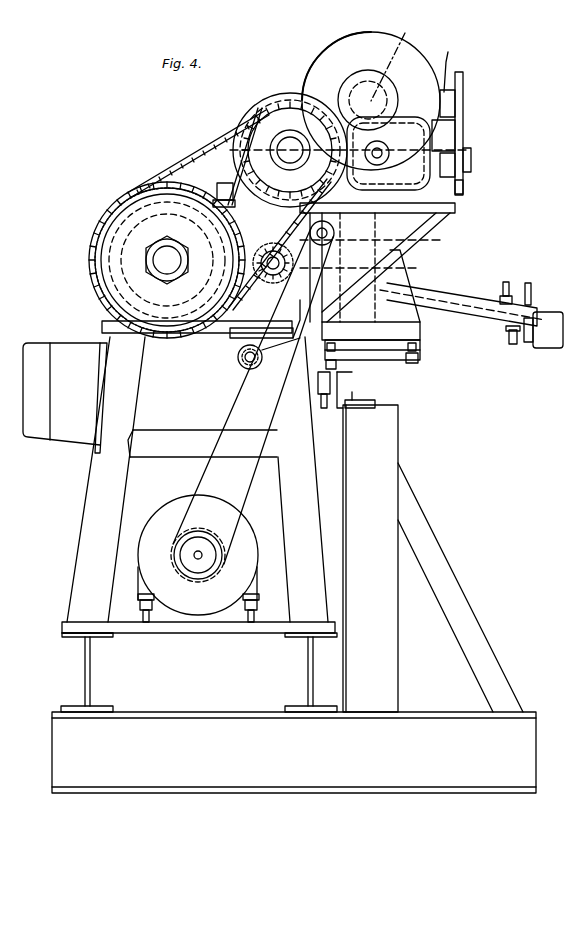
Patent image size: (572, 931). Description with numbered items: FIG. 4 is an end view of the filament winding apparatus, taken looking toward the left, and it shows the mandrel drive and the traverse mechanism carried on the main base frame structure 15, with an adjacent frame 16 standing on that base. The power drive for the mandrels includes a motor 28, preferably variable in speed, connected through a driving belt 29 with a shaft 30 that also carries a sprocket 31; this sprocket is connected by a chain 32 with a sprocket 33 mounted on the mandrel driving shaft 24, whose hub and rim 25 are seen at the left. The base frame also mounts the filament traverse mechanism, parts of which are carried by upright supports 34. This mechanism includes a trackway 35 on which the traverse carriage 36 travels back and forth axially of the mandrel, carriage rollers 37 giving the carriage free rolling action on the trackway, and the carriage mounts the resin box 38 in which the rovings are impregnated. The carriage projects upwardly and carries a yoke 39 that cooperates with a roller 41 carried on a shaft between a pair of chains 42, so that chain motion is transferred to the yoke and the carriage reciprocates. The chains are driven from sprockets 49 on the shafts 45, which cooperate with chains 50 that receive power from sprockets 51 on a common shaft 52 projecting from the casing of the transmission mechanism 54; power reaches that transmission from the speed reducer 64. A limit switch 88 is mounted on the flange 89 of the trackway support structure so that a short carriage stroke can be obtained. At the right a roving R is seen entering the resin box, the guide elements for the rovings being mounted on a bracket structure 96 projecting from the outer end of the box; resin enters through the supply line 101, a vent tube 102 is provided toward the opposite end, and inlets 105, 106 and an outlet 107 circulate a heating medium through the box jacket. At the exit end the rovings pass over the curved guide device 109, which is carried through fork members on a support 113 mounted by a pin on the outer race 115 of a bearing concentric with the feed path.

The main base frame structure 15 is at (320, 684).
The frame 16 is at (80, 534).
The mandrel driving shaft 24 is at (166, 262).
The pulley rim 25 is at (105, 265).
The motor 28 is at (165, 508).
The driving belt 29 is at (247, 494).
The shaft 30 is at (258, 116).
The sprocket 31 is at (236, 135).
The chain 32 is at (178, 170).
The sprocket 33 is at (142, 196).
The upright supports 34 is at (398, 451).
The trackway 35 is at (395, 362).
The traverse carriage 36 is at (422, 332).
The carriage rollers 37 is at (420, 362).
The resin box 38 is at (446, 290).
The yoke 39 is at (371, 94).
The roller 41 is at (388, 148).
The chains 42 is at (356, 86).
The shafts 45 is at (471, 165).
The sprockets 49 is at (463, 190).
The chains 50 is at (463, 128).
The sprockets 51 is at (465, 82).
The common shaft 52 is at (448, 64).
The transmission mechanism 54 is at (352, 42).
The speed reducer 64 is at (408, 118).
The limit switch 88 is at (316, 390).
The flange 89 is at (358, 408).
The bracket structure 96 is at (548, 348).
The supply line 101 is at (528, 282).
The vent tube 102 is at (414, 233).
The inlet 105 is at (505, 280).
The inlet 106 is at (510, 342).
The outlet 107 is at (412, 250).
The guide device 109 is at (252, 268).
The support 113 is at (308, 235).
The outer race 115 is at (306, 308).
The roving R is at (545, 318).